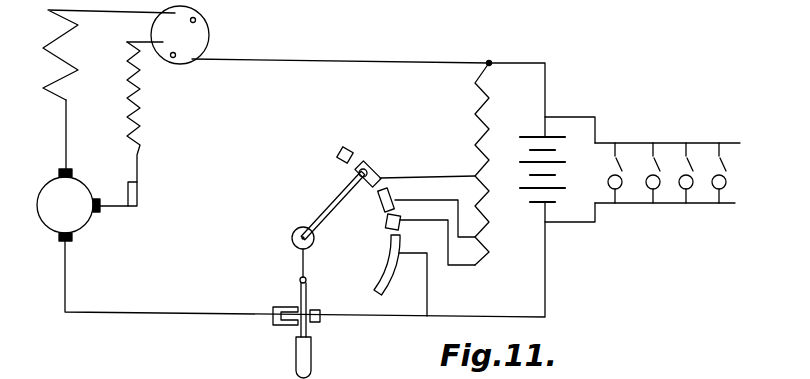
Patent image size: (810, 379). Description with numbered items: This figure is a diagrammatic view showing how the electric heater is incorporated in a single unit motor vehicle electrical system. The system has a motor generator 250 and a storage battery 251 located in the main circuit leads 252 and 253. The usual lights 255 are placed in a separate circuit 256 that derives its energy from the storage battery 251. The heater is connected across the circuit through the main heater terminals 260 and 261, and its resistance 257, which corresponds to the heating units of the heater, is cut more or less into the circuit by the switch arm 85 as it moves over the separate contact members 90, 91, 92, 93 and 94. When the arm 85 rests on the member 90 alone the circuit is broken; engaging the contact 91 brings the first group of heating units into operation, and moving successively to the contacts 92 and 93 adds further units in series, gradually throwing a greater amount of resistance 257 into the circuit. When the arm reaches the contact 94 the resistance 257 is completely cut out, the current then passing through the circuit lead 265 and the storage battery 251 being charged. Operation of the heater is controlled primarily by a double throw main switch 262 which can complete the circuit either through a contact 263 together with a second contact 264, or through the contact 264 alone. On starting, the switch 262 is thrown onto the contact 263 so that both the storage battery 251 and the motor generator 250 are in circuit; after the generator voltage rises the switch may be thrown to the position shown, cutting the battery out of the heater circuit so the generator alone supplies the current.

The contact arm 85 is at (340, 197).
The member 90 is at (345, 147).
The contact 91 is at (364, 165).
The contact 92 is at (385, 196).
The contact 93 is at (398, 224).
The contact 94 is at (386, 281).
The motor generator 250 is at (77, 217).
The storage battery 251 is at (563, 150).
The main circuit lead 252 is at (292, 60).
The main circuit lead 253 is at (110, 312).
The lights 255 is at (660, 187).
The circuit 256 is at (638, 143).
The resistance 257 is at (480, 133).
The main heater terminal 260 is at (519, 52).
The main heater terminal 261 is at (300, 279).
The main switch 262 is at (315, 283).
The contact 263 is at (315, 323).
The second contact 264 is at (290, 322).
The circuit lead 265 is at (428, 302).